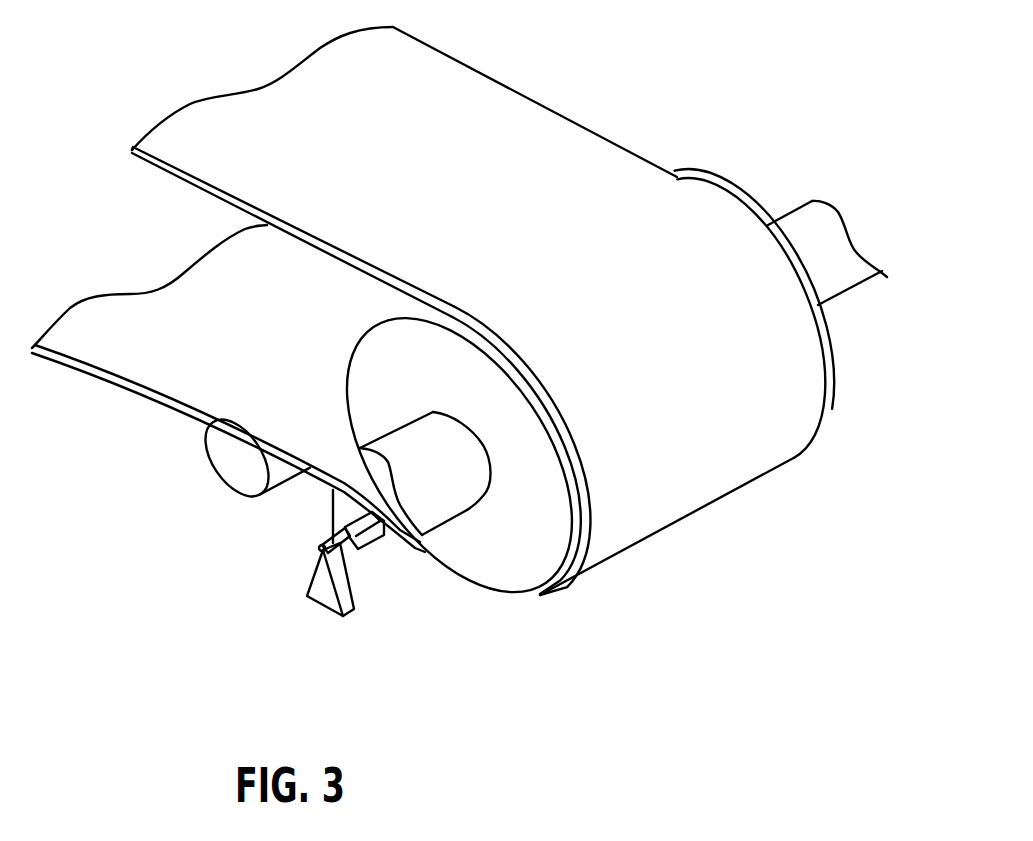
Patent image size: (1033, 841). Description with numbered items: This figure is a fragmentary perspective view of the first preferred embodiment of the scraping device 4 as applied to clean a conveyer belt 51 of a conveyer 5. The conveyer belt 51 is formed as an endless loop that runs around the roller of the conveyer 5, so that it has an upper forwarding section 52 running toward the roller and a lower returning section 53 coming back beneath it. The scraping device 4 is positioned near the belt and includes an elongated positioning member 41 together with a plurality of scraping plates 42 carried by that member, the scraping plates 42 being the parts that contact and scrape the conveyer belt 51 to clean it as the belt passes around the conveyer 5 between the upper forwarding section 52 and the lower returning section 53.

The scraping device 4 is at (386, 593).
The elongated positioning member 41 is at (320, 550).
The scraping plates 42 is at (338, 511).
The conveyer 5 is at (557, 94).
The conveyer belt 51 is at (624, 147).
The upper forwarding section 52 is at (230, 173).
The lower returning section 53 is at (120, 380).